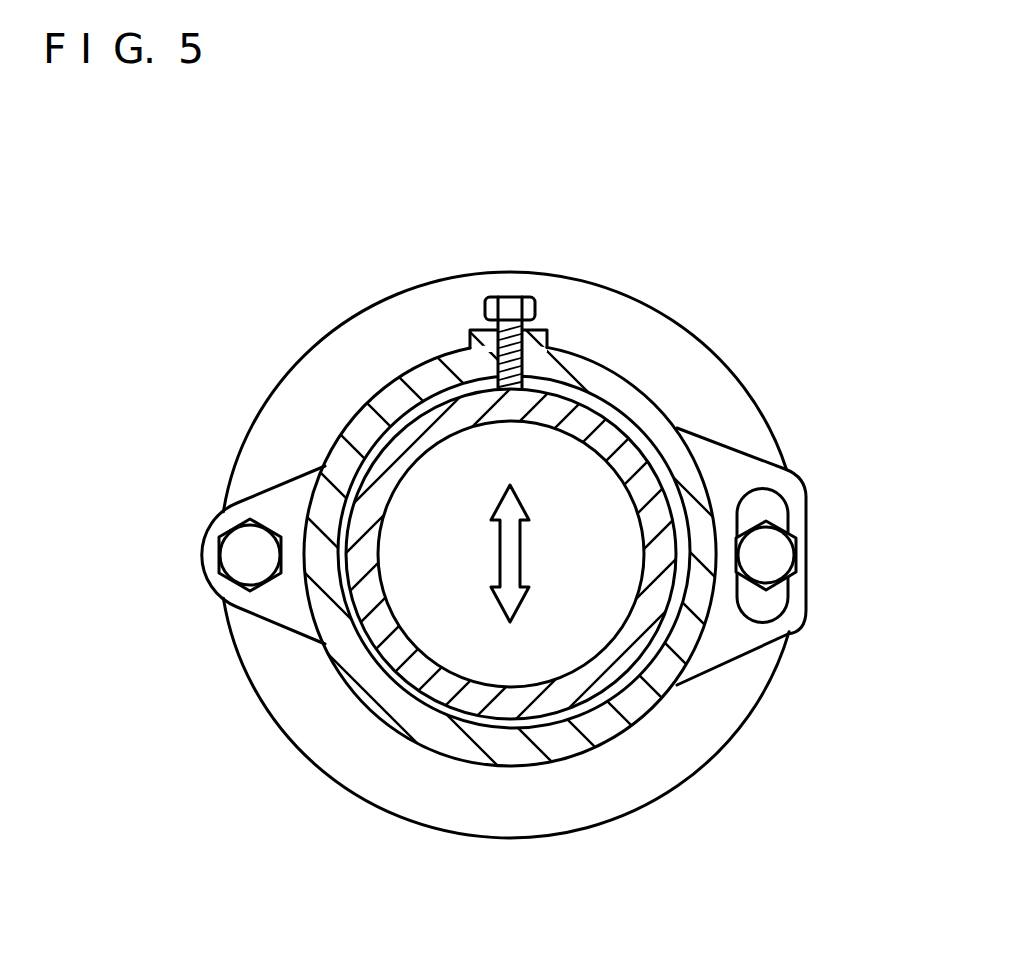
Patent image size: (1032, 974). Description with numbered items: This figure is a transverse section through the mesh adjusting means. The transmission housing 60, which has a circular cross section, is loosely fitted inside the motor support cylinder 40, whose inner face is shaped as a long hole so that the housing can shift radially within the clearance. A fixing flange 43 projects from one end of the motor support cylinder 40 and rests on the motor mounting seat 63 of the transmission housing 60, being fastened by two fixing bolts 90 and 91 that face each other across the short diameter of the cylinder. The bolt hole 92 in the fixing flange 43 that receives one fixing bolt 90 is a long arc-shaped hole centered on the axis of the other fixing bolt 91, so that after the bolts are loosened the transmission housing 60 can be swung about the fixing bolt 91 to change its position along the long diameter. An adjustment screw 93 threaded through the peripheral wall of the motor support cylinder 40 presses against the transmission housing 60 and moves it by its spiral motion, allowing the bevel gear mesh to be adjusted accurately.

The motor support cylinder 40 is at (617, 368).
The fixing flange 43 is at (252, 507).
The transmission housing 60 is at (433, 692).
The motor mounting seat 63 is at (353, 332).
The fixing bolt 90 is at (788, 552).
The fixing bolt 91 is at (233, 570).
The bolt hole 92 is at (780, 596).
The adjustment screw 93 is at (505, 297).